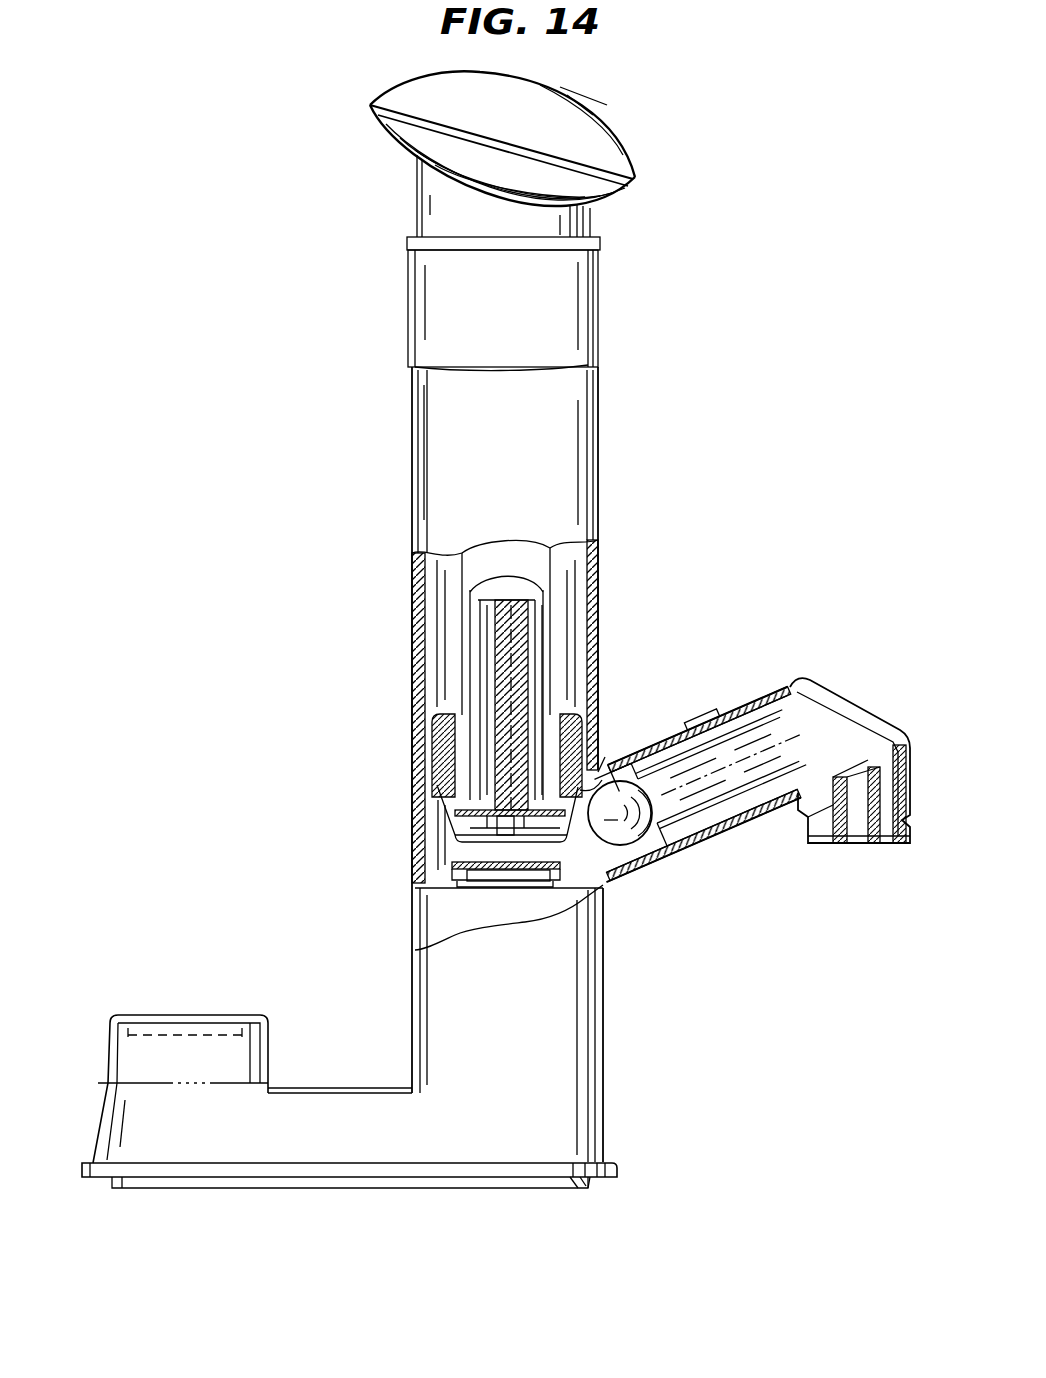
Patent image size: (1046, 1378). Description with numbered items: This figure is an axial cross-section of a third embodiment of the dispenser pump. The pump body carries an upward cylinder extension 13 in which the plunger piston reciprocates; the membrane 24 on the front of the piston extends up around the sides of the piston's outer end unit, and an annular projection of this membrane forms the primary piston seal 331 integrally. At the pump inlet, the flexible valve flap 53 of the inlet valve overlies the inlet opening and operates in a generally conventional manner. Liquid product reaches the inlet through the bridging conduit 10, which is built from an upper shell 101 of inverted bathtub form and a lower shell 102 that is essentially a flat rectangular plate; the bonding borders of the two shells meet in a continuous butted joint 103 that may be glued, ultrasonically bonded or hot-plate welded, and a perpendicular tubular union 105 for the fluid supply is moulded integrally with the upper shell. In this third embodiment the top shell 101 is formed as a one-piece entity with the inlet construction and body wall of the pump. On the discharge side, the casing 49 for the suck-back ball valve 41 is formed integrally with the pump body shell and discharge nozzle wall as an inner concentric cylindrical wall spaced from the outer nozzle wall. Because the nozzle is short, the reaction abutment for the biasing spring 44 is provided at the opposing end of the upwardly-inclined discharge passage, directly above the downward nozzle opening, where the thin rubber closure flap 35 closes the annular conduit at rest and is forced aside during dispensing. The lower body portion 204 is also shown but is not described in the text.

The inlet conduit 10 is at (397, 1101).
The upward cylinder extension 13 is at (420, 606).
The membrane 24 is at (456, 842).
The rubber closure flap 35 is at (895, 845).
The suck-back ball valve 41 is at (637, 820).
The biasing spring 44 is at (769, 725).
The casing 49 is at (610, 757).
The flexible valve flap 53 is at (510, 872).
The upper shell 101 is at (368, 1092).
The lower shell 102 is at (506, 1162).
The butted joint 103 is at (593, 1180).
The tubular union 105 is at (183, 1040).
The lower body 204 is at (605, 995).
The primary piston seal 331 is at (433, 722).